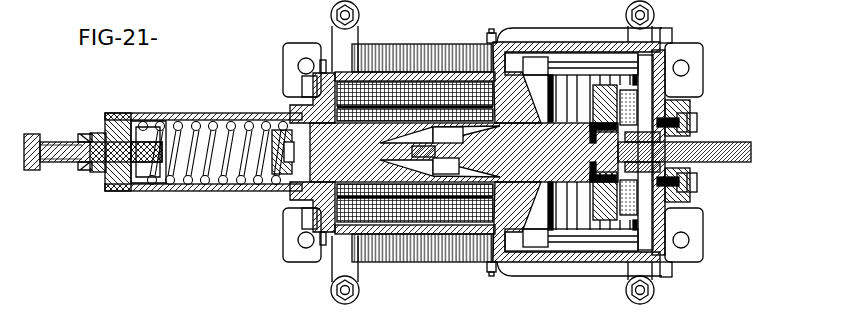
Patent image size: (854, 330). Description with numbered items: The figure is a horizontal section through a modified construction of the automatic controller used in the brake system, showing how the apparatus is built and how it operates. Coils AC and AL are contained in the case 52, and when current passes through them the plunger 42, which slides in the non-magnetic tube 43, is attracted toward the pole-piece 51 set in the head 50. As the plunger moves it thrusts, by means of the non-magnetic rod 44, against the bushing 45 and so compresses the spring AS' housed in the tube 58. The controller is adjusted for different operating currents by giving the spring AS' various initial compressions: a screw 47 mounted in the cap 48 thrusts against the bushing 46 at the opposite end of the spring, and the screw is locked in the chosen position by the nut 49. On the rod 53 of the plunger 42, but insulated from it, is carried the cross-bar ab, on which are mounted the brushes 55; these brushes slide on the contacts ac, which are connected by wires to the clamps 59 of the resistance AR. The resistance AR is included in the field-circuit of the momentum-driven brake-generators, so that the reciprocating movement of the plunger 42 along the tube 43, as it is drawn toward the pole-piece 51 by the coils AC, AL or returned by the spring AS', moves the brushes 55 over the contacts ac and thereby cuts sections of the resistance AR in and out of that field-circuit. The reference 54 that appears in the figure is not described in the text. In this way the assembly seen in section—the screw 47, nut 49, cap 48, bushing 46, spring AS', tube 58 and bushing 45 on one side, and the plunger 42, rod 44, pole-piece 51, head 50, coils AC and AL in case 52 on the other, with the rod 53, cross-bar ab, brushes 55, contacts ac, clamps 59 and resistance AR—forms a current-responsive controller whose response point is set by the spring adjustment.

The screw 47 is at (33, 134).
The nut 49 is at (87, 134).
The cap 48 is at (106, 181).
The tube 58 is at (166, 191).
The bushing 46 is at (158, 126).
The spring AS' is at (213, 136).
The bushing 45 is at (280, 128).
The coil AC is at (300, 79).
The coil AL is at (292, 203).
The head 50 is at (314, 75).
The pole-piece 51 is at (308, 252).
The resistance AR is at (424, 46).
The case 52 is at (452, 235).
The clamps 59 is at (494, 32).
The plunger 42 is at (529, 180).
The non-magnetic tube 43 is at (478, 128).
The non-magnetic rod 44 is at (400, 152).
The contacts ac is at (589, 82).
The cross-bar ab is at (603, 222).
The bearing 54 is at (690, 136).
The brushes 55 is at (642, 105).
The rod 53 is at (710, 163).